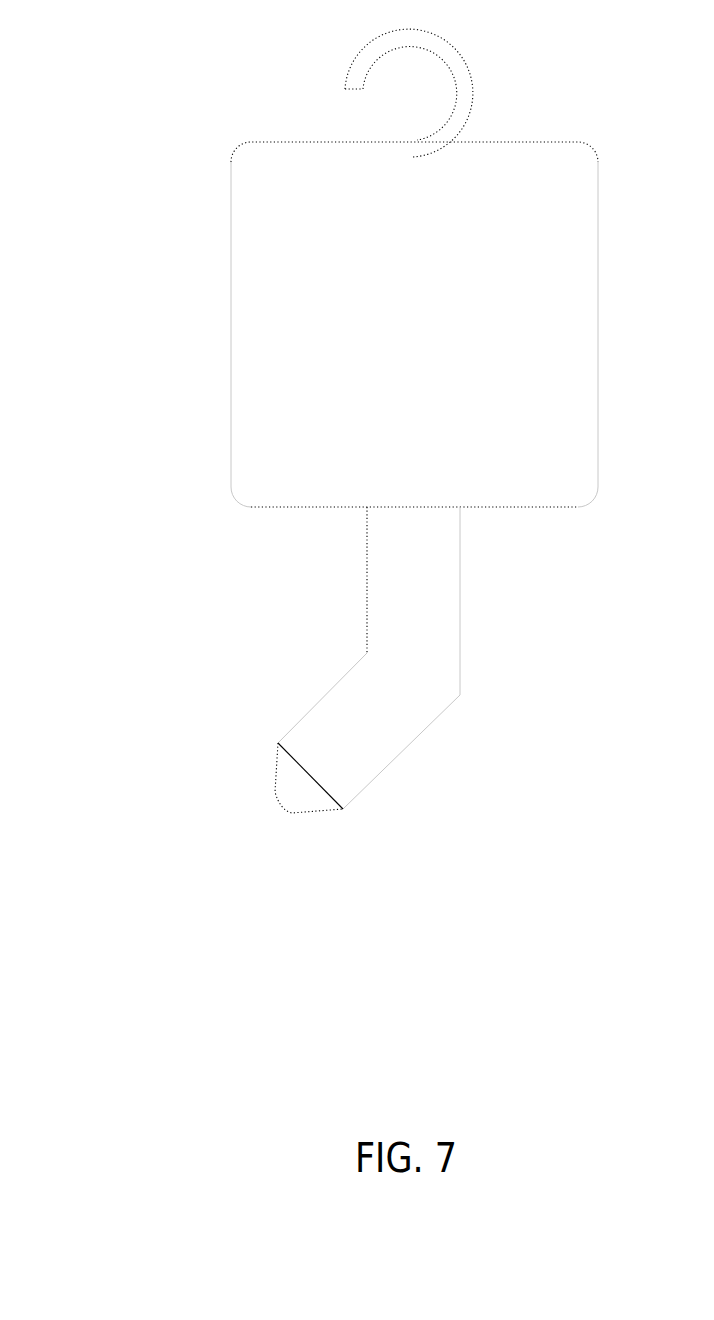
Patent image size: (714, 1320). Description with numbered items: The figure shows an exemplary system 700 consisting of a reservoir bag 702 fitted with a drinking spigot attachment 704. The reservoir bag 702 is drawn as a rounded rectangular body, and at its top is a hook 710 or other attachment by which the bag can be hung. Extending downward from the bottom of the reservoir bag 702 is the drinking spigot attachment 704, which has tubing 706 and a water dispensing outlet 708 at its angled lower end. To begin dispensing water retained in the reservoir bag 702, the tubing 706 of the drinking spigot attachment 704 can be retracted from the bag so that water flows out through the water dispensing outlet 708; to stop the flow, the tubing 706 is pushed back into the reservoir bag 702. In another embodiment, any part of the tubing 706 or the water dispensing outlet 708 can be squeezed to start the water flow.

The system 700 is at (90, 906).
The reservoir bag 702 is at (257, 512).
The drinking spigot attachment 704 is at (343, 809).
The tubing 706 is at (447, 706).
The water dispensing outlet 708 is at (275, 780).
The hook 710 is at (345, 85).